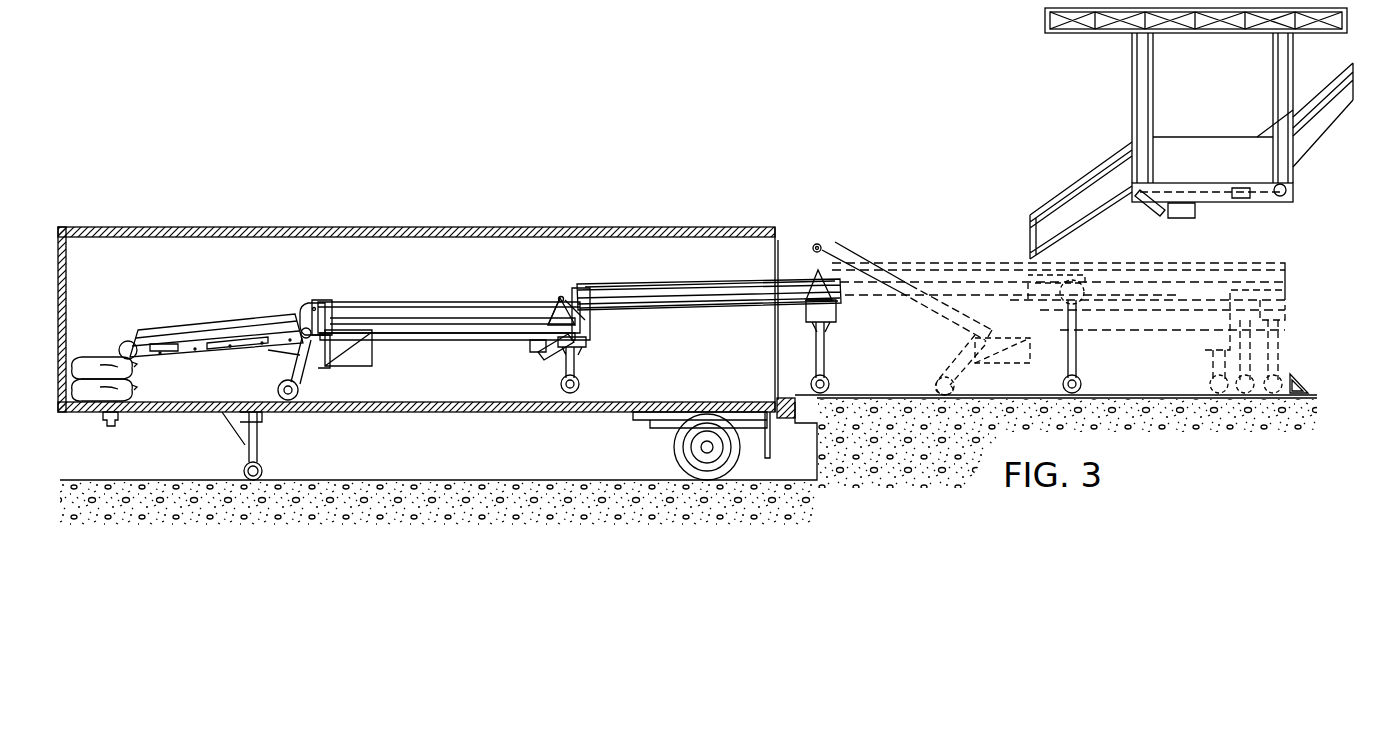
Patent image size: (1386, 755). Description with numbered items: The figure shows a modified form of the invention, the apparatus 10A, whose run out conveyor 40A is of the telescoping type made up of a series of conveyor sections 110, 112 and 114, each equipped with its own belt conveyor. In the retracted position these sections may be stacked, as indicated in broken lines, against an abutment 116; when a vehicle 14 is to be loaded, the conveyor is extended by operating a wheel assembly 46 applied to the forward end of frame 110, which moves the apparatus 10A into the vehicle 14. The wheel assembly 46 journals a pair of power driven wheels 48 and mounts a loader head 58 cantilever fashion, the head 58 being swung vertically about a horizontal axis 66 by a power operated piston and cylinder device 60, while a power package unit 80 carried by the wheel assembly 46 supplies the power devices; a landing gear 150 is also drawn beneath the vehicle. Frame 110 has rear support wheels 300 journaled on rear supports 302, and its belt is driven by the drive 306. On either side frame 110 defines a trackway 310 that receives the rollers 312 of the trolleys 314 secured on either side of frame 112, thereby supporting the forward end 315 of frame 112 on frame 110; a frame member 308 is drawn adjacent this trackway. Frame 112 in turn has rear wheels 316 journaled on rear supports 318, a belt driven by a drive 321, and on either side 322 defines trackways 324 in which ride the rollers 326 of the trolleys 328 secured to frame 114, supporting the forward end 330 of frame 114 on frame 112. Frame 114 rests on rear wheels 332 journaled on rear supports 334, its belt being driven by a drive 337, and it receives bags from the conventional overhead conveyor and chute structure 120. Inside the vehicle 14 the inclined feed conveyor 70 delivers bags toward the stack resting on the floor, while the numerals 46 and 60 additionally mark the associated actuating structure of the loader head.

The vehicle 14 is at (462, 210).
The loader head 58 is at (220, 305).
The landing gear 150 is at (312, 412).
The front wheel assembly 46 is at (340, 380).
The power operated piston and cylinder device 60 is at (262, 360).
The inclined feed conveyor 70 is at (182, 330).
The horizontal axis 66 is at (306, 323).
The power driven wheels 48 is at (270, 386).
The conveyor section 308 is at (455, 318).
The trackway 310 is at (472, 320).
The power package unit 80 is at (362, 372).
The rollers 312 is at (545, 326).
The drive 306 is at (540, 358).
The rear supports 302 is at (580, 358).
The rear support wheels 300 is at (582, 383).
The conveyor section (frame) 110 is at (521, 298).
The conveyor section (frame) 112 is at (643, 277).
The run out conveyor 40A is at (708, 262).
The side of frame 112 322 is at (748, 290).
The trackways 324 is at (700, 302).
The trolleys 314 is at (558, 300).
The forward end of frame 112 315 is at (566, 296).
The rollers 326 is at (797, 298).
The trolleys 328 is at (806, 290).
The drive 321 is at (830, 316).
The rear supports 318 is at (828, 360).
The rear wheels 316 is at (833, 387).
The forward end of frame 114 330 is at (833, 262).
The conveyor section (frame) 114 is at (952, 252).
The drive 337 is at (1082, 300).
The rear supports 334 is at (1075, 356).
The rear wheels 332 is at (1083, 386).
The abutment 116 is at (1302, 375).
The apparatus 10A is at (921, 160).
The overhead conveyor and chute structure 120 is at (1062, 88).